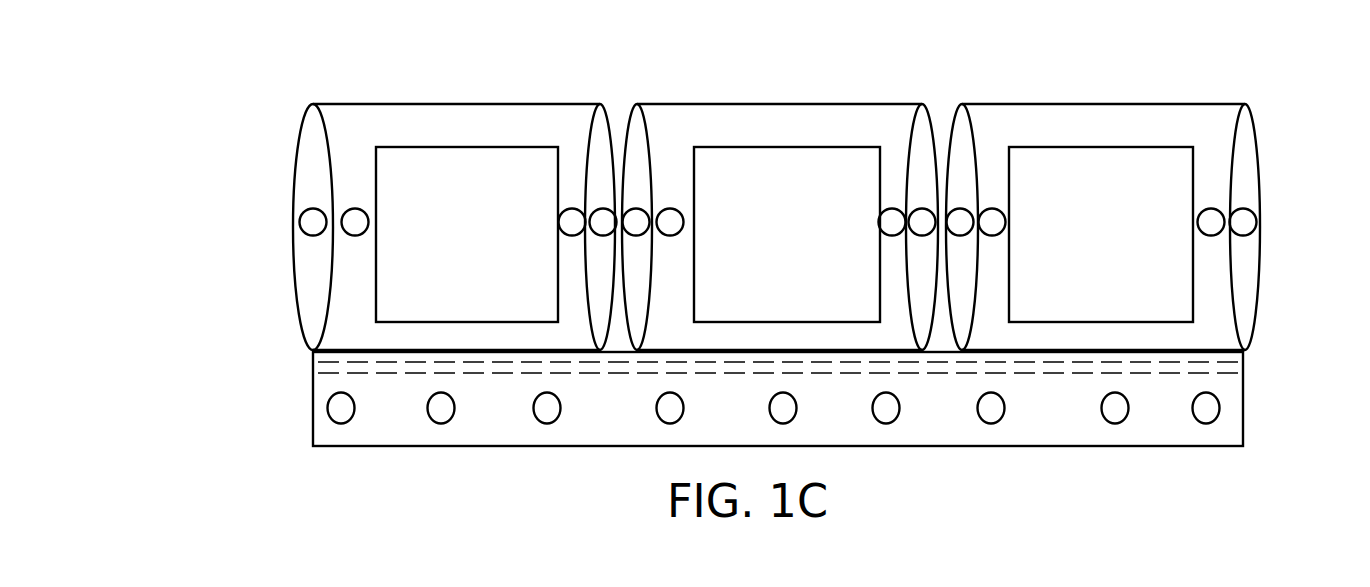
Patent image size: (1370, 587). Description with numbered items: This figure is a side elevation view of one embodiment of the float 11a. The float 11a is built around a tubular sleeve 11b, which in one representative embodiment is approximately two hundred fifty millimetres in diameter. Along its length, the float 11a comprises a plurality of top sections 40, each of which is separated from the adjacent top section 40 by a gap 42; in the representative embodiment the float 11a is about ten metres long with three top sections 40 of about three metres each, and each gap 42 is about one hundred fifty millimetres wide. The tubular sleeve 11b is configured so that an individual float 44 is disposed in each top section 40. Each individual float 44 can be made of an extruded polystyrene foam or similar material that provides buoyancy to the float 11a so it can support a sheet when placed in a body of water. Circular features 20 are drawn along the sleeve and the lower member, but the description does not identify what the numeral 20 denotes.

The float 11a is at (1003, 60).
The tubular sleeve 11b is at (1197, 104).
The fluid ports 20 is at (356, 236).
The top section 40 is at (426, 125).
The gap 42 is at (618, 117).
The individual float 44 is at (508, 186).